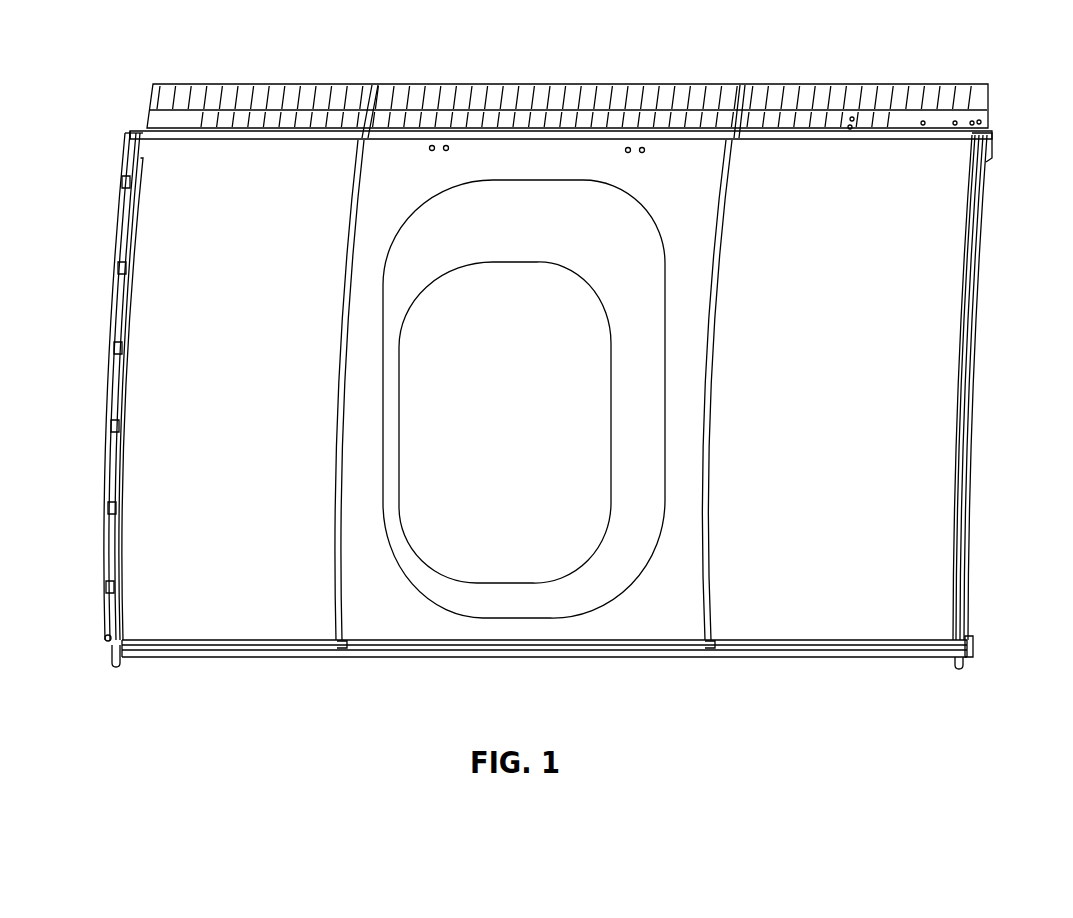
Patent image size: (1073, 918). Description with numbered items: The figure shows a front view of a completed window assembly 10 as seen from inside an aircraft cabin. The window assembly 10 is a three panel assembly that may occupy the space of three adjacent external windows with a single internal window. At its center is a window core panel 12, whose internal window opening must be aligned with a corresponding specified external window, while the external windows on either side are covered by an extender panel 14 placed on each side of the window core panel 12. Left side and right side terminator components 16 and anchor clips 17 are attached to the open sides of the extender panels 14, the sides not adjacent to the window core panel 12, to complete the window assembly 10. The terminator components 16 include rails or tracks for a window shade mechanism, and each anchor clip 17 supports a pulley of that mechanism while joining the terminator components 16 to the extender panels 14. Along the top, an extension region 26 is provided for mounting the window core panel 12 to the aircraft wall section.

The window assembly 10 is at (644, 698).
The window core panel 12 is at (400, 612).
The extender panel 14 is at (212, 620).
The terminator component 16 is at (107, 612).
The anchor clip 17 is at (118, 668).
The extension region 26 is at (527, 105).